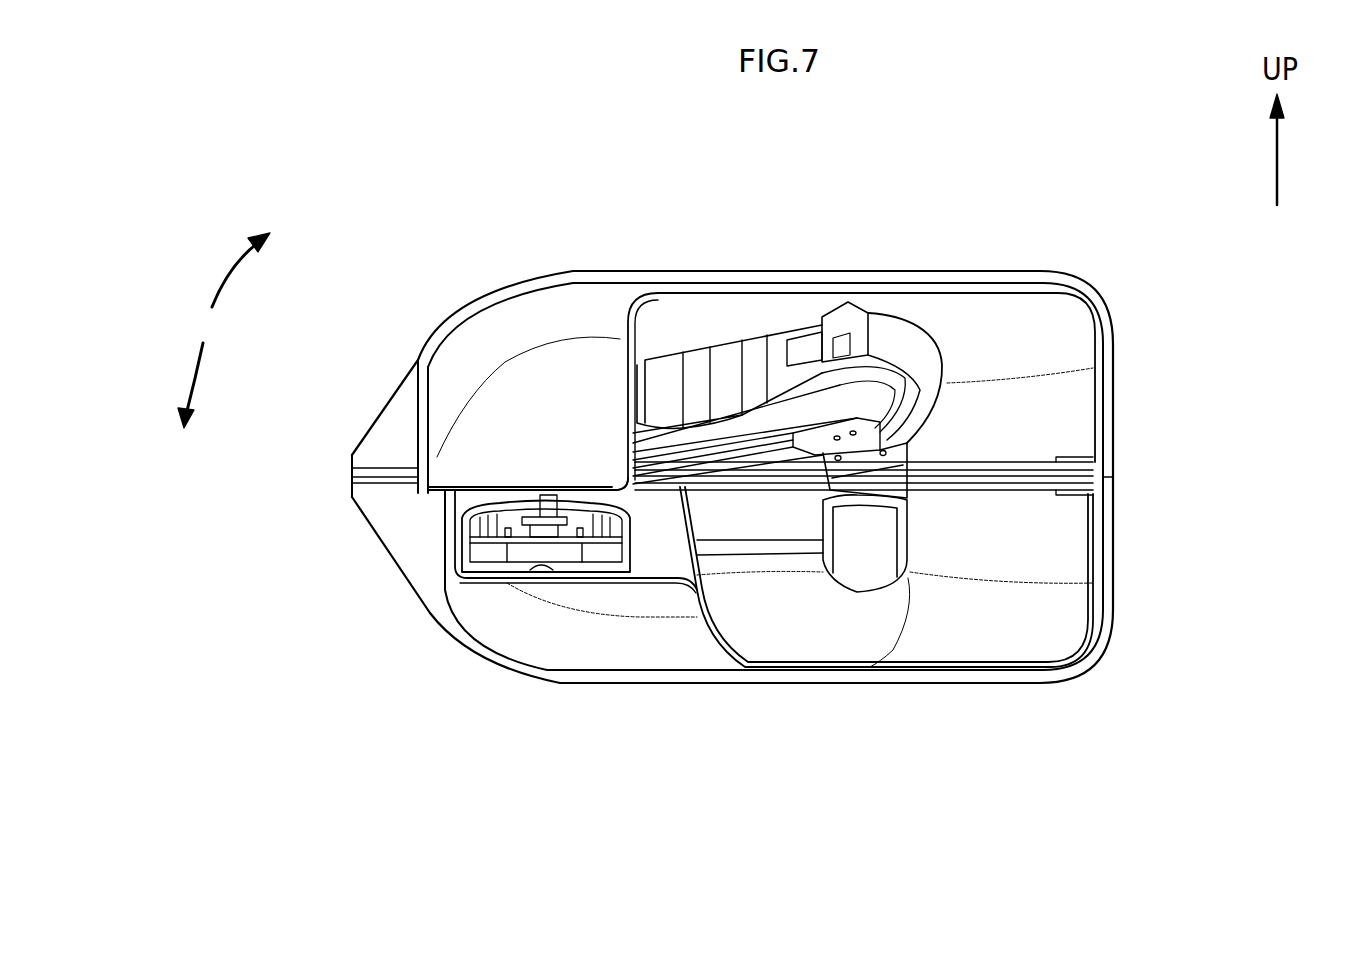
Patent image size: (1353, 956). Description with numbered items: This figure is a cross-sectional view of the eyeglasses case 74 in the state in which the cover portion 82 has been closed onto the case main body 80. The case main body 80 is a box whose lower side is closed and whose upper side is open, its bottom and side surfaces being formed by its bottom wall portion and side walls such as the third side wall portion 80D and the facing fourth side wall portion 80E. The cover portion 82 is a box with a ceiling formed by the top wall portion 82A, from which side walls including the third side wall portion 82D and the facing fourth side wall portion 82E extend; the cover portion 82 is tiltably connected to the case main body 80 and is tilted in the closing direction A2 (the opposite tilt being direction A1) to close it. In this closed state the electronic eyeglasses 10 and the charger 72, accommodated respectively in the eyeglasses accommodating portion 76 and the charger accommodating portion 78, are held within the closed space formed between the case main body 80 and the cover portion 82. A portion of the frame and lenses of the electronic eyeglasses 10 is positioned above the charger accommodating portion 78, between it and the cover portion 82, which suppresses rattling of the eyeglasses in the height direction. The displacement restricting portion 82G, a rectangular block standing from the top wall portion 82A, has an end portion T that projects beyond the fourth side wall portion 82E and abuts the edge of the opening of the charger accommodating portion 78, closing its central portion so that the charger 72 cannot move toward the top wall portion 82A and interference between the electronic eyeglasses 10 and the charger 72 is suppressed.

The electronic eyeglasses 10 is at (975, 320).
The charger 72 is at (630, 542).
The eyeglasses case 74 is at (960, 205).
The eyeglasses accommodating portion 76 is at (1010, 635).
The charger accommodating portion 78 is at (455, 640).
The case main body 80 is at (1120, 575).
The third side wall portion 80D is at (1115, 530).
The fourth side wall portion 80E is at (450, 537).
The cover portion 82 is at (634, 262).
The top wall portion 82A is at (817, 268).
The third side wall portion 82D is at (1115, 413).
The fourth side wall portion 82E is at (412, 413).
The displacement restricting portion 82G is at (537, 425).
The end portion T is at (590, 483).
The opening direction A1 is at (265, 262).
The closing direction A2 is at (190, 406).